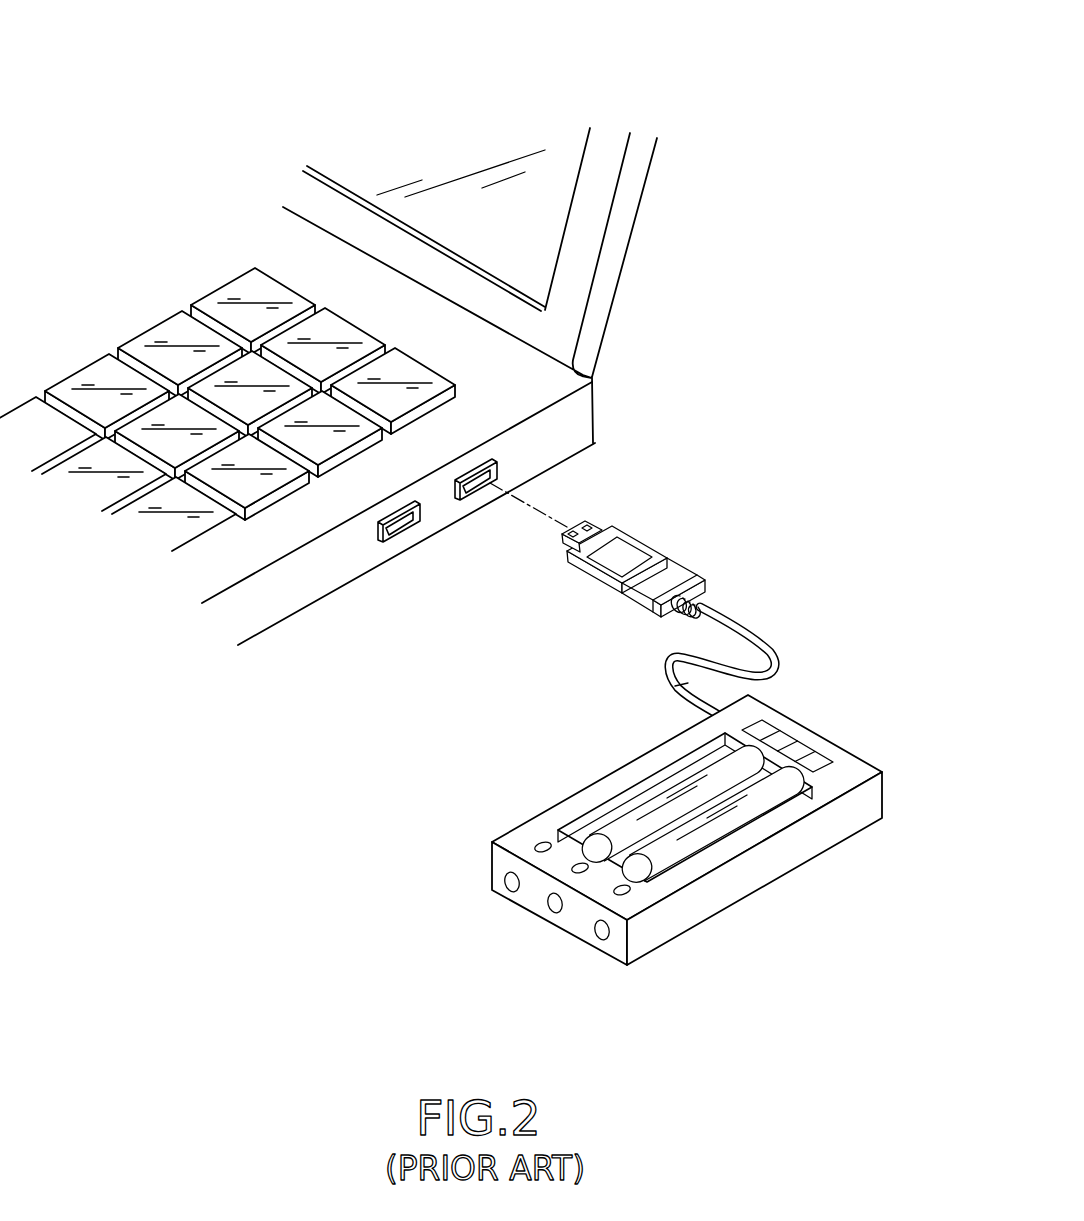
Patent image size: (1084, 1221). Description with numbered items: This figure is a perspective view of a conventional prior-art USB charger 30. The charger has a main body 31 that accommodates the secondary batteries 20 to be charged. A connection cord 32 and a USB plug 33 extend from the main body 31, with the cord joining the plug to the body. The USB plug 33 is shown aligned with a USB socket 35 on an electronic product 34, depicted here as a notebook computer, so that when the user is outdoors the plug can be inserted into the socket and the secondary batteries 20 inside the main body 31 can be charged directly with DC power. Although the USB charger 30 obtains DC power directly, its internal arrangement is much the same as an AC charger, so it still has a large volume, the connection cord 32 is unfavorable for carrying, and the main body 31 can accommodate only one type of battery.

The electronic product 34 is at (378, 386).
The USB socket 35 is at (496, 484).
The USB charger 30 is at (708, 712).
The USB plug 33 is at (600, 522).
The connection cord 32 is at (718, 614).
The main body 31 is at (825, 748).
The secondary batteries 20 is at (745, 813).